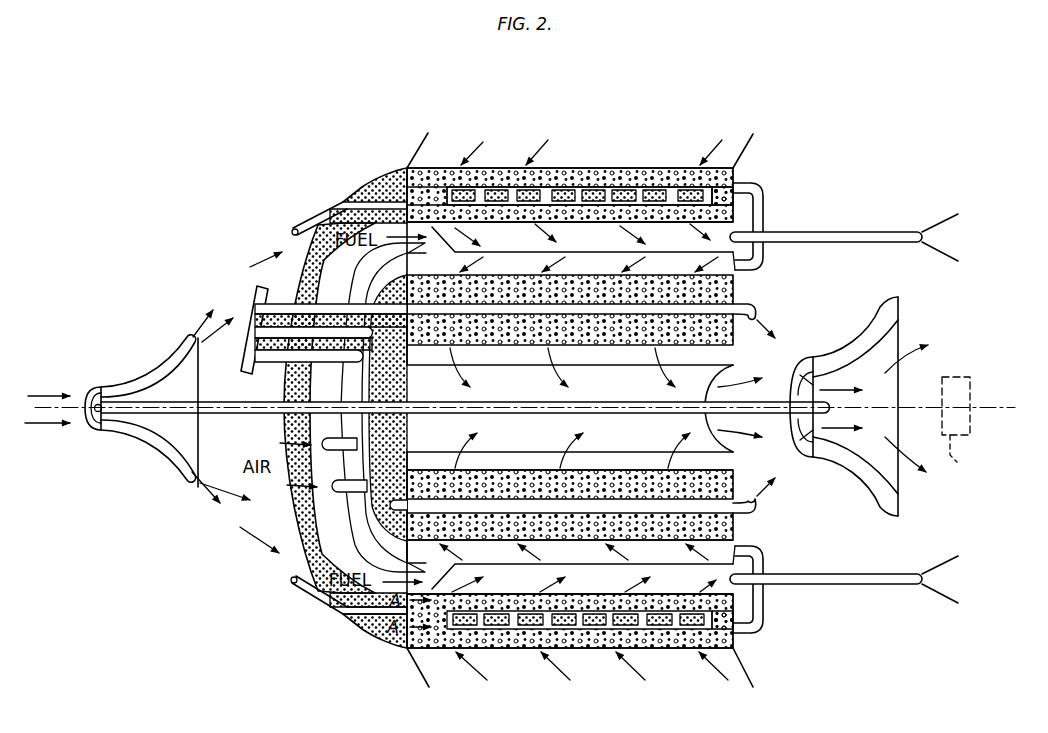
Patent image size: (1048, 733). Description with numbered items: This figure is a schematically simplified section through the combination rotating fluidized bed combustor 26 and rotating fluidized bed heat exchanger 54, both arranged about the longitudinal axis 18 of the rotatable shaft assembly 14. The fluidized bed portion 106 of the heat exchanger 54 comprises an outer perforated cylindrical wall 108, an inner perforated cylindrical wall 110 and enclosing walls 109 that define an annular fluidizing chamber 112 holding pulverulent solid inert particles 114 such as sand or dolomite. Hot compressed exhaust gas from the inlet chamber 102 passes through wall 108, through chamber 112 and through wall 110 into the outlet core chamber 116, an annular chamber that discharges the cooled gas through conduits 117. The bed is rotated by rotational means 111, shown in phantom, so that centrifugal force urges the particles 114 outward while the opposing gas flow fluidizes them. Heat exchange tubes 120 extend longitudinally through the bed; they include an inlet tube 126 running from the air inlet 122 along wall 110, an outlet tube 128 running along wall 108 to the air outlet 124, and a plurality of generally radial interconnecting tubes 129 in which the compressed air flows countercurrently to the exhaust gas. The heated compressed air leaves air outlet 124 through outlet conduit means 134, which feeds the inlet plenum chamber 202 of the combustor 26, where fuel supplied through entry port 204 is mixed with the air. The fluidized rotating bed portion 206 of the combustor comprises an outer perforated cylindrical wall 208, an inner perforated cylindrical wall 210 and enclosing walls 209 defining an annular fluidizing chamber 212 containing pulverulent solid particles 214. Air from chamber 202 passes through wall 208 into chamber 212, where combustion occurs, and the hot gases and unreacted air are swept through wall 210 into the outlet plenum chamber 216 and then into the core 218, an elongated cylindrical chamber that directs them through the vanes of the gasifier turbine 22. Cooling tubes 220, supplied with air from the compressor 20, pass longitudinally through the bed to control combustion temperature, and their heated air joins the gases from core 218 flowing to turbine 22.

The inlet chamber 102 is at (557, 112).
The fluidized bed portion 106 is at (739, 167).
The outer perforated cylindrical wall 108 is at (659, 172).
The enclosing walls 109 is at (406, 180).
The inner perforated cylindrical wall 110 is at (648, 221).
The annular fluidizing chamber 112 is at (429, 178).
The pulverulent solid inert particles 114 is at (490, 170).
The outlet core chamber 116 is at (484, 248).
The conduits 117 is at (882, 234).
The heat exchange tubes 120 is at (638, 184).
The air inlet 122 is at (375, 197).
The air outlet 124 is at (763, 191).
The inlet tube 126 is at (552, 210).
The outlet tube 128 is at (553, 186).
The interconnecting tubes 129 is at (587, 192).
The outlet conduit means 134 is at (764, 252).
The rotatable shaft assembly 14 is at (252, 412).
The longitudinal axis 18 is at (988, 400).
The rotational means 111 is at (967, 455).
The compressor 20 is at (133, 438).
The gasifier turbine 22 is at (858, 342).
The rotating fluidized bed combustor 26 is at (740, 538).
The heat exchanger 54 is at (402, 165).
The inlet plenum chamber 202 is at (633, 560).
The entry port 204 is at (390, 564).
The fluidized rotating bed portion 206 is at (738, 478).
The outer perforated cylindrical wall 208 is at (476, 543).
The enclosing walls 209 is at (405, 530).
The inner perforated cylindrical wall 210 is at (493, 464).
The annular fluidizing chamber 212 is at (592, 477).
The pulverulent solid particles 214 is at (442, 480).
The outlet plenum chamber 216 is at (637, 452).
The core 218 is at (625, 388).
The cooling tubes 220 is at (395, 499).